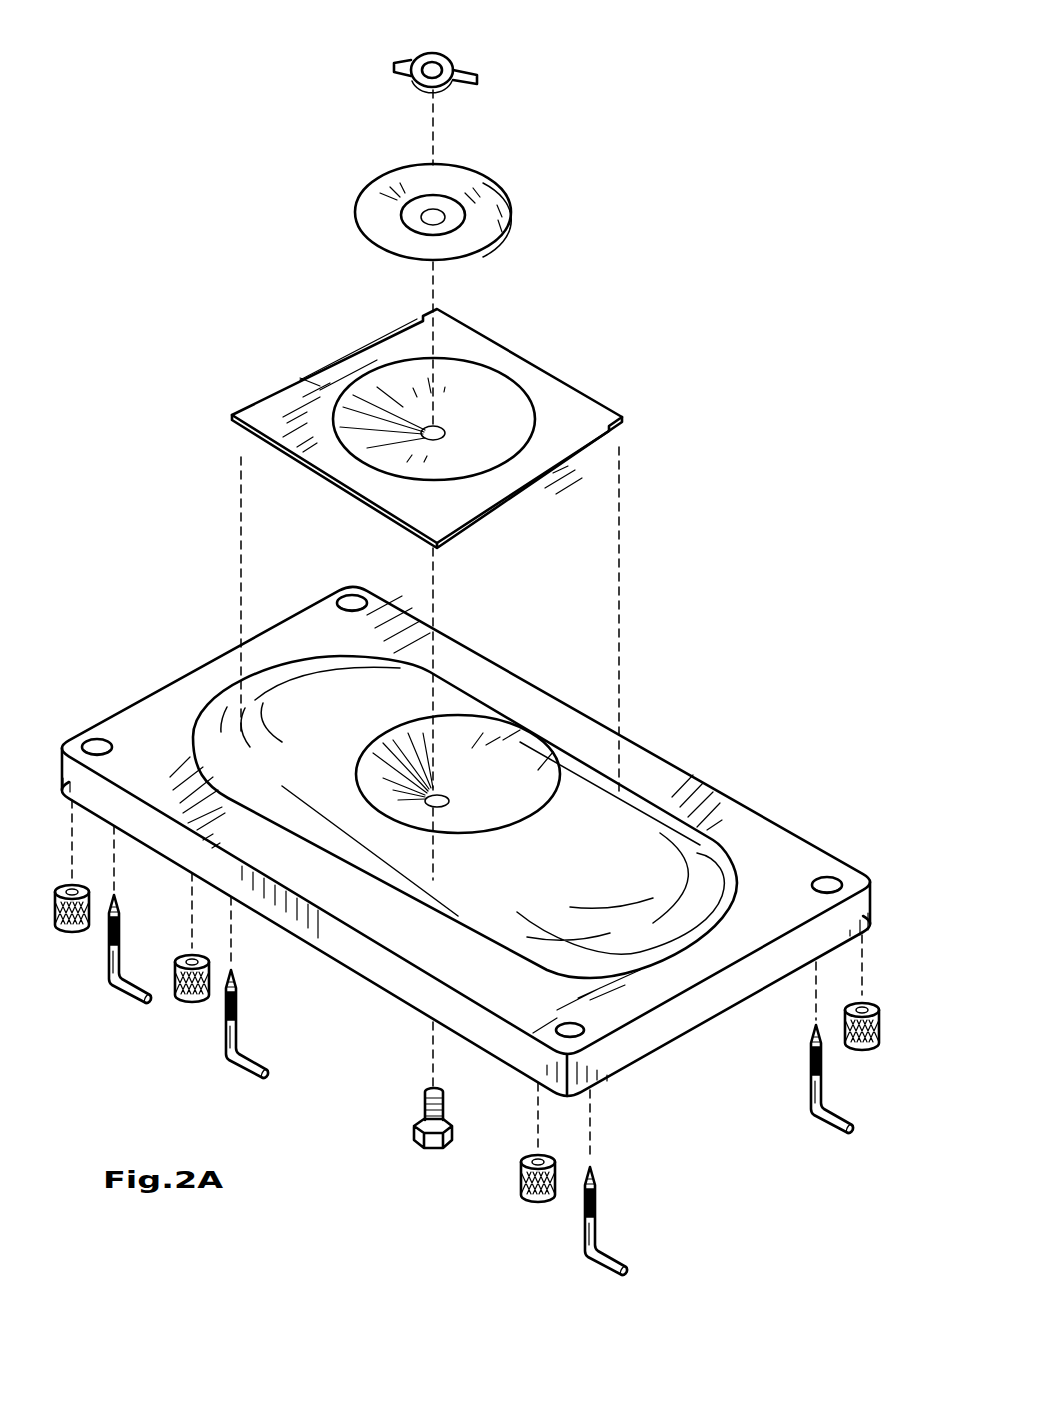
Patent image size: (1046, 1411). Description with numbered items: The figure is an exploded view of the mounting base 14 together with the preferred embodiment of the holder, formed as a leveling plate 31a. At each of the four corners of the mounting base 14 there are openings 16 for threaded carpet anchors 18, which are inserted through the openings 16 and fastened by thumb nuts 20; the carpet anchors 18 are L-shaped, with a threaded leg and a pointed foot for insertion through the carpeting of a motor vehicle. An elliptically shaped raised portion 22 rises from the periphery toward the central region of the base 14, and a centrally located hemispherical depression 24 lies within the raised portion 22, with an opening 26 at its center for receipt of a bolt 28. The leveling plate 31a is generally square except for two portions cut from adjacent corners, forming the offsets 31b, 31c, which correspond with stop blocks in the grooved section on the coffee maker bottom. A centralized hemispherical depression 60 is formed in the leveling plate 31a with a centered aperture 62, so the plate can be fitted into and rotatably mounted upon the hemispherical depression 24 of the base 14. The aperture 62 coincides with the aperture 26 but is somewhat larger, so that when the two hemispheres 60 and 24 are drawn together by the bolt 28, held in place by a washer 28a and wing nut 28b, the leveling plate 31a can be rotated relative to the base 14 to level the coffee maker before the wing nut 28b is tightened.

The mounting base 14 is at (782, 853).
The openings 16 is at (592, 1027).
The threaded carpet anchors 18 is at (810, 1113).
The thumb nuts 20 is at (873, 1087).
The raised portion 22 is at (268, 705).
The hemispherical depression 24 is at (620, 729).
The opening 26 is at (437, 795).
The bolt 28 is at (440, 1140).
The washer 28a is at (372, 192).
The wing nut 28b is at (398, 66).
The leveling plate 31a is at (578, 400).
The offset 31b is at (423, 311).
The offset 31c is at (624, 433).
The hemispherical depression 60 is at (393, 388).
The aperture 62 is at (445, 434).